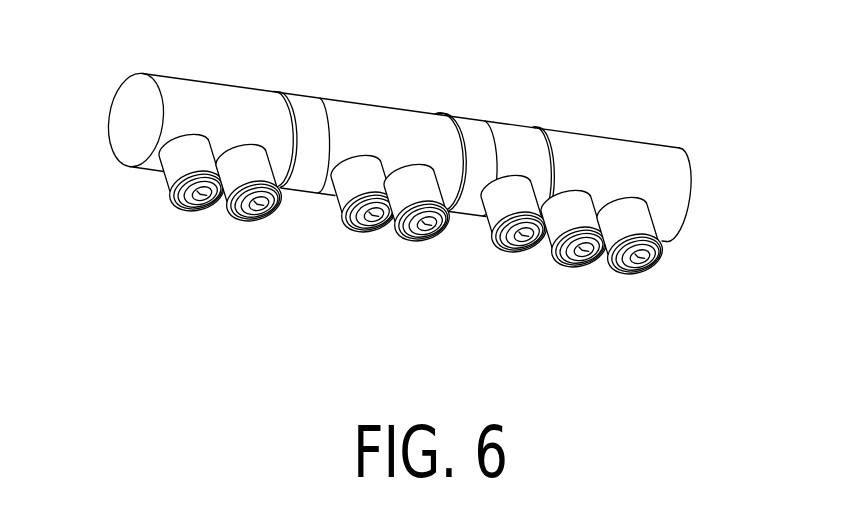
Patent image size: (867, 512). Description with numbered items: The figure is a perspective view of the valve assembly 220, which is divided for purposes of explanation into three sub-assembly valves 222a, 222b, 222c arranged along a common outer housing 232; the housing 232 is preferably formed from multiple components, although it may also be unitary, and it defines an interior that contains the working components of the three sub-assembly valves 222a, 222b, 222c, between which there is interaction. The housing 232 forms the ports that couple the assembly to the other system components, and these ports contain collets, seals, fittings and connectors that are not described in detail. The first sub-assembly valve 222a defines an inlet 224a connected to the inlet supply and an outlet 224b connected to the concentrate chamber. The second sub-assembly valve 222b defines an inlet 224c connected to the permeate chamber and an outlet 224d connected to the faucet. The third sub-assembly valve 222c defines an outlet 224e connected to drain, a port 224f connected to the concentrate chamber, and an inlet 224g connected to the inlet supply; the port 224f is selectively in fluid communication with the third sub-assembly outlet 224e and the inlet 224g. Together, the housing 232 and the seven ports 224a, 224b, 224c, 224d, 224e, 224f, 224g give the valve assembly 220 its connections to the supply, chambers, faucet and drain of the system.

The valve assembly 220 is at (726, 199).
The first sub-assembly valve 222a is at (319, 87).
The second sub-assembly valve 222b is at (442, 104).
The third sub-assembly valve 222c is at (679, 140).
The inlet 224a is at (195, 216).
The outlet 224b is at (250, 218).
The inlet 224c is at (368, 236).
The outlet 224d is at (420, 242).
The outlet 224e is at (523, 250).
The port 224f is at (583, 267).
The inlet 224g is at (643, 273).
The outer housing 232 is at (130, 121).